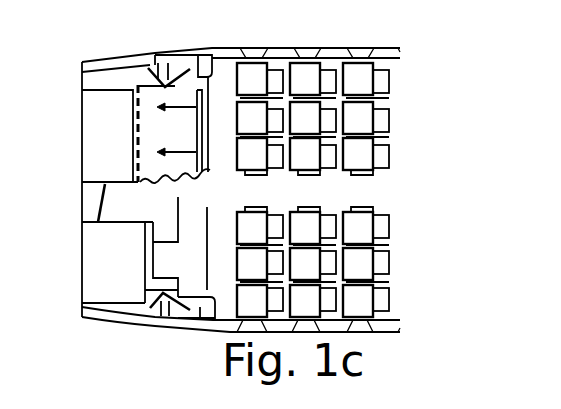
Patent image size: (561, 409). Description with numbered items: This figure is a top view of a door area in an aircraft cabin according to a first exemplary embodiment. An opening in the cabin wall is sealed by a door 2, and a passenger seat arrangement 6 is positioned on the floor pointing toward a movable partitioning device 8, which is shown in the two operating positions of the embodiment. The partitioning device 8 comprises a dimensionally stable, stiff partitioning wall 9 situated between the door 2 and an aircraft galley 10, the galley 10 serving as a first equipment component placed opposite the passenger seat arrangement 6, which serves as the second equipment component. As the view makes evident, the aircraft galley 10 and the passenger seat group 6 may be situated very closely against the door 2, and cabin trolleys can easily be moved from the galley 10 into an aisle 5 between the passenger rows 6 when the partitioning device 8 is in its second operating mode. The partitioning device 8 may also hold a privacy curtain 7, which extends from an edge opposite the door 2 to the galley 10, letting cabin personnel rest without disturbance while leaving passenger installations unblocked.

The aircraft galley 10 is at (113, 82).
The door 2 is at (202, 67).
The partitioning device 8 is at (201, 93).
The partitioning wall 9 is at (206, 160).
The privacy curtain 7 is at (162, 185).
The passenger seat arrangement 6 is at (237, 171).
The aisle 5 is at (298, 203).